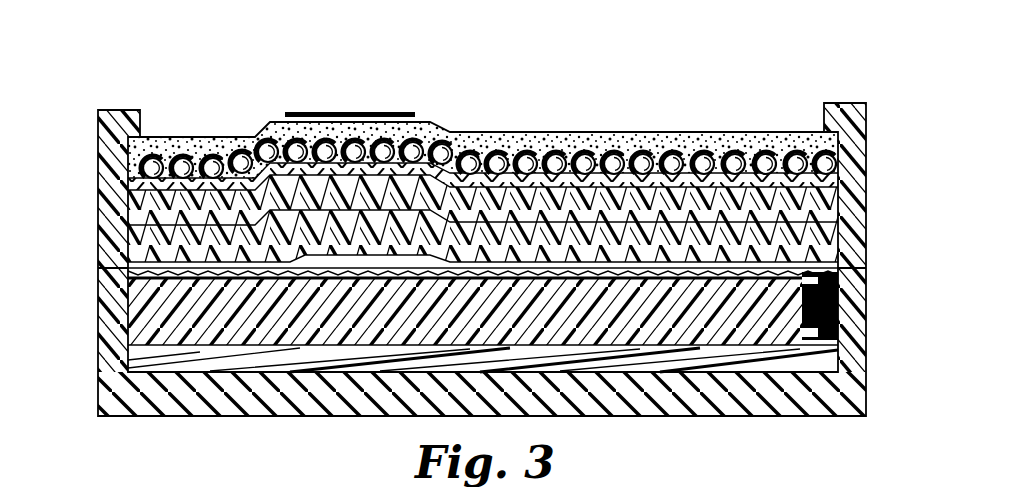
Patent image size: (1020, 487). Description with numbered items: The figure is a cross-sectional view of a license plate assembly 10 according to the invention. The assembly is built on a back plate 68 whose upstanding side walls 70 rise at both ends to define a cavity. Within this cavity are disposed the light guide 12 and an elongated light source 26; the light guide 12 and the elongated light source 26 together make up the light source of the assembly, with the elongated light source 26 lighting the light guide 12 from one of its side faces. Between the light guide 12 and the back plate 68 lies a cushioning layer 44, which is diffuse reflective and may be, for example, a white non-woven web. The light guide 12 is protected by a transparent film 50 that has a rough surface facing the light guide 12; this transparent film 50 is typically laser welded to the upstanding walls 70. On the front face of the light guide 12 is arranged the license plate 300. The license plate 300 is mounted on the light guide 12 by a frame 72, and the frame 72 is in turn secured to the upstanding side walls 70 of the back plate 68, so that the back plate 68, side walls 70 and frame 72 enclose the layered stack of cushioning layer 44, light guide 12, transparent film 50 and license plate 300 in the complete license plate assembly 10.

The license plate assembly 10 is at (128, 84).
The license plate 300 is at (652, 132).
The frame 72 is at (112, 232).
The upstanding side walls 70 is at (112, 308).
The transparent film 50 is at (820, 260).
The cushioning layer 44 is at (170, 363).
The back plate 68 is at (285, 410).
The light guide 12 is at (670, 323).
The elongated light source 26 is at (810, 335).